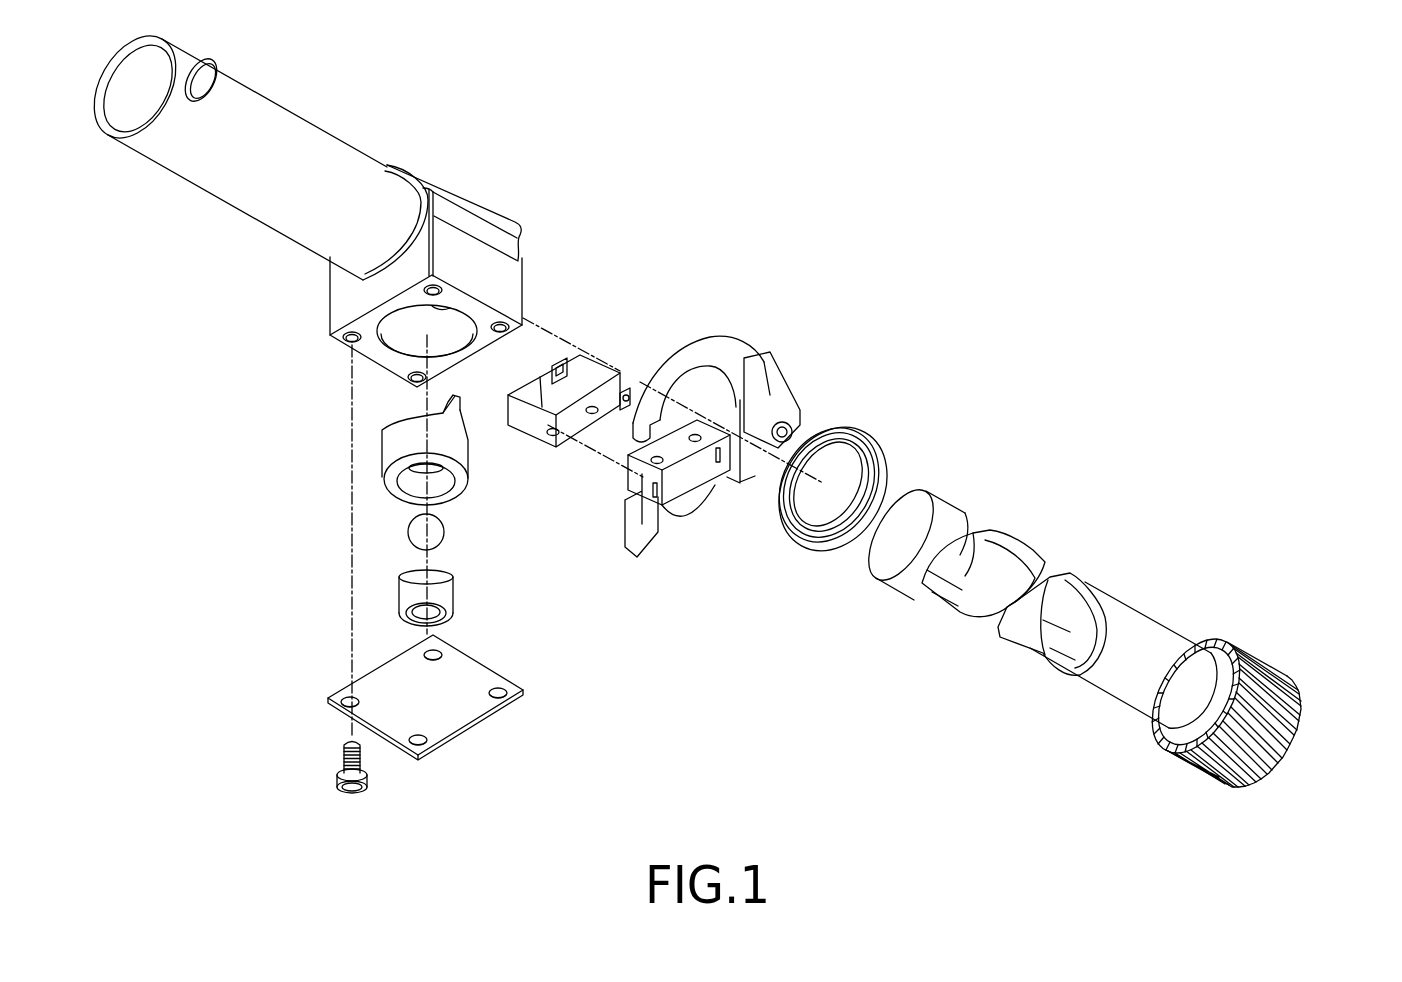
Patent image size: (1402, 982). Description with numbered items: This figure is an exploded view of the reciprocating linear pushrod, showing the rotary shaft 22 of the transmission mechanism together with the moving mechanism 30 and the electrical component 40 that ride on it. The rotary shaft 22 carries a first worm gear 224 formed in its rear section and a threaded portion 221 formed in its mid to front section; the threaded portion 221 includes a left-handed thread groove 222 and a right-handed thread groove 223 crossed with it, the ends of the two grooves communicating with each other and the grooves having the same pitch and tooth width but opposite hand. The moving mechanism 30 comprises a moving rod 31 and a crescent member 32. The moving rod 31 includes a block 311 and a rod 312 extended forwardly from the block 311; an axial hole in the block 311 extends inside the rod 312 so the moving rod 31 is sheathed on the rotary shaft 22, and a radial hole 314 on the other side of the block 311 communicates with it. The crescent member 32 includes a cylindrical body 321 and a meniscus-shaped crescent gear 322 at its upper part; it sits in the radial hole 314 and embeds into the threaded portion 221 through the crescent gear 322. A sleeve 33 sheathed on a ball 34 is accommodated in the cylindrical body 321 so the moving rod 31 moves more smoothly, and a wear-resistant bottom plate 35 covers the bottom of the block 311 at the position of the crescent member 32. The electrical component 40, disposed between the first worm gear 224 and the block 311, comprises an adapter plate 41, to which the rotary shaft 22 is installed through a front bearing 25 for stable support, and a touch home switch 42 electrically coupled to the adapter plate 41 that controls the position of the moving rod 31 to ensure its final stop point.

The rotary shaft 22 is at (1153, 605).
The threaded portion 221 is at (1128, 507).
The left-handed thread groove 222 is at (1013, 557).
The right-handed thread groove 223 is at (1050, 575).
The first worm gear 224 is at (1280, 672).
The front bearing 25 is at (823, 483).
The moving mechanism 30 is at (485, 184).
The moving rod 31 is at (453, 98).
The block 311 is at (463, 193).
The rod 312 is at (313, 133).
The radial hole 314 is at (407, 343).
The crescent member 32 is at (546, 457).
The cylindrical body 321 is at (468, 467).
The crescent gear 322 is at (460, 410).
The sleeve 33 is at (453, 595).
The ball 34 is at (446, 532).
The bottom plate 35 is at (460, 718).
The electrical component 40 is at (760, 336).
The adapter plate 41 is at (695, 355).
The touch home switch 42 is at (602, 373).